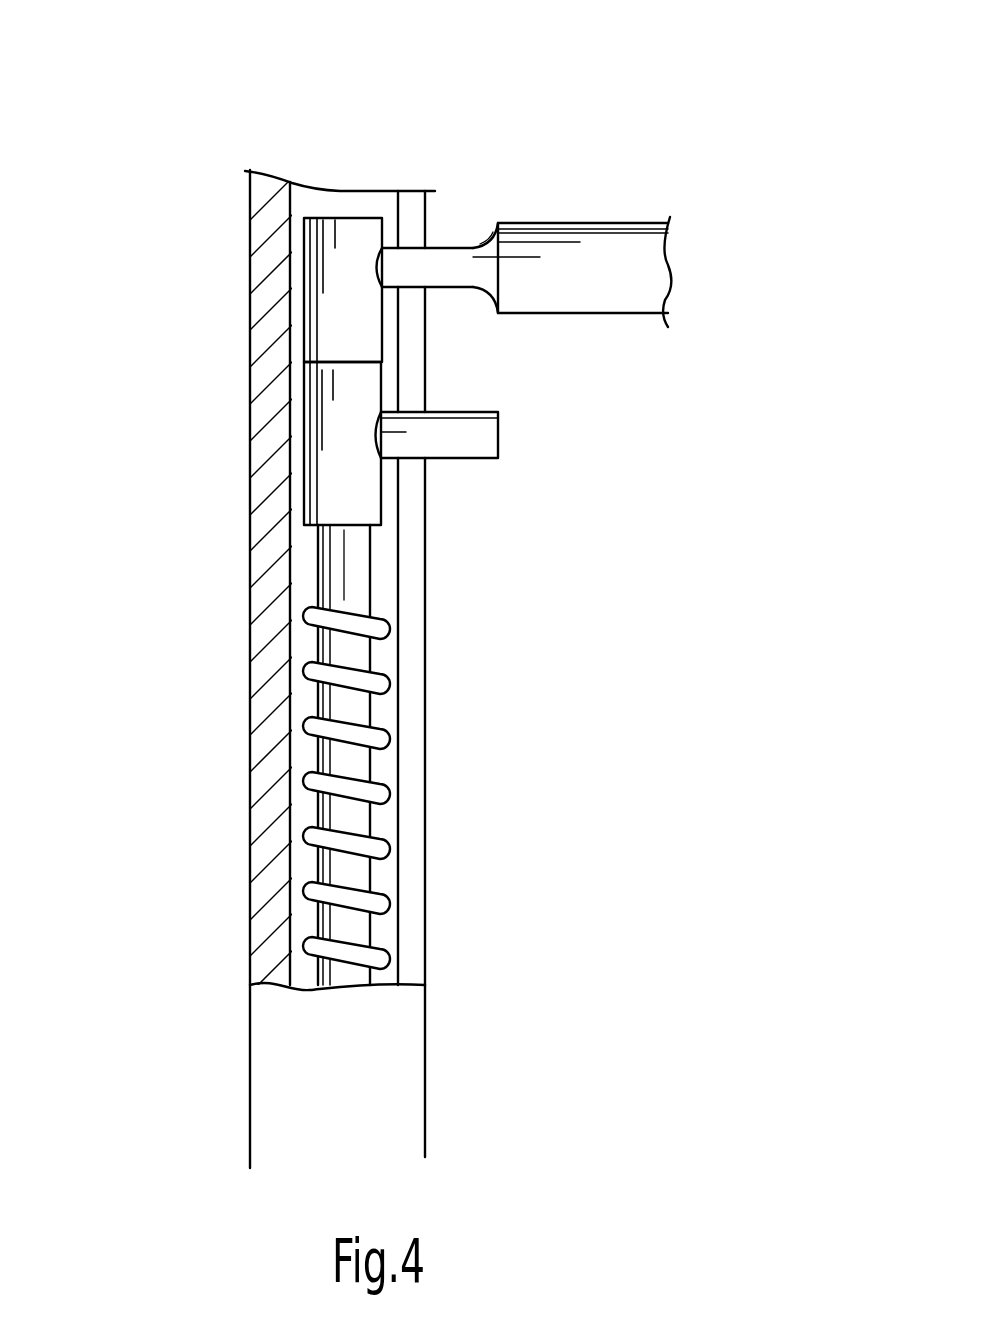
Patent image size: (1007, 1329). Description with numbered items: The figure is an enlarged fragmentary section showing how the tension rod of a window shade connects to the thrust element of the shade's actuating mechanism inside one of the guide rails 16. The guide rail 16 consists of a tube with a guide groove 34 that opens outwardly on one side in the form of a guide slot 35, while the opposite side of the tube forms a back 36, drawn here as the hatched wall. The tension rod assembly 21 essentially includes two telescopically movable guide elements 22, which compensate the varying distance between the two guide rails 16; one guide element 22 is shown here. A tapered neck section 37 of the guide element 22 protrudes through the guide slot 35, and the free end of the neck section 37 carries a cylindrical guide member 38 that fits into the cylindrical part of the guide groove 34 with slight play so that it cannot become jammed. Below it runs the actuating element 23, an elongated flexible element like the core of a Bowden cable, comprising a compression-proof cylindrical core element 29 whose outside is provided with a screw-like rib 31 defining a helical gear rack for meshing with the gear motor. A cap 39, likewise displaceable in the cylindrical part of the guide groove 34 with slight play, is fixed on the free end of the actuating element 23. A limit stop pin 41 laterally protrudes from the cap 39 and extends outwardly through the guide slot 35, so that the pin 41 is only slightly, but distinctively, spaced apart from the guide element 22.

The guide rail 16 is at (234, 283).
The tension rod assembly 21 is at (660, 176).
The guide element 22 is at (630, 315).
The actuating element 23 is at (405, 660).
The core element 29 is at (357, 763).
The screw-like rib 31 is at (372, 740).
The guide groove 34 is at (327, 212).
The guide slot 35 is at (413, 220).
The back 36 is at (270, 203).
The tapered neck section 37 is at (448, 267).
The cylindrical guide member 38 is at (372, 232).
The cap 39 is at (362, 508).
The limit stop pin 41 is at (480, 440).